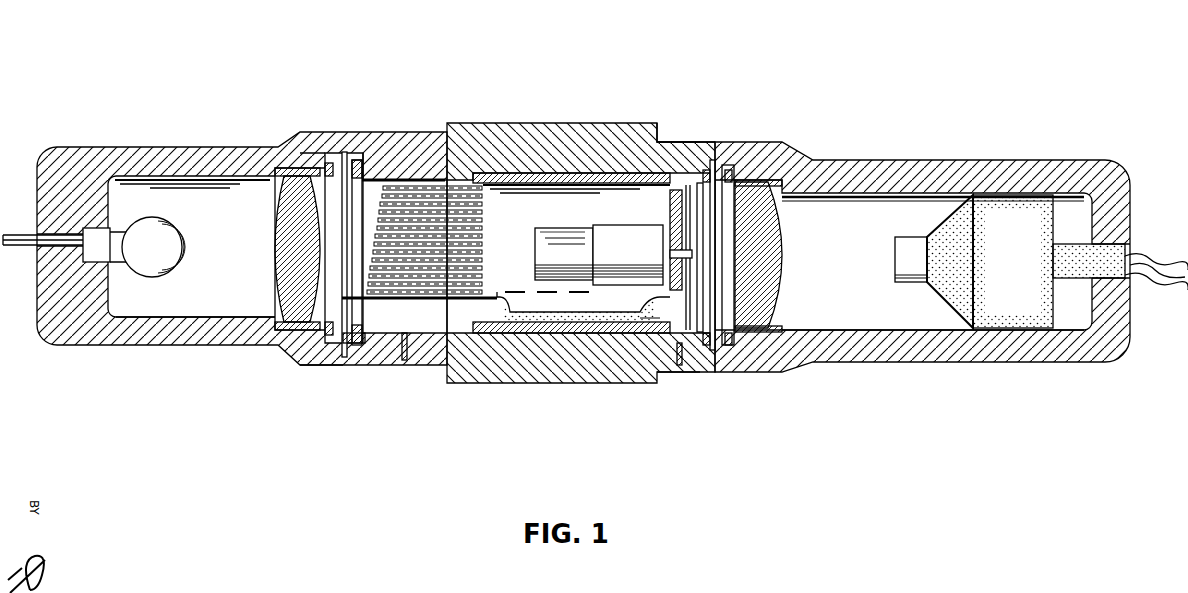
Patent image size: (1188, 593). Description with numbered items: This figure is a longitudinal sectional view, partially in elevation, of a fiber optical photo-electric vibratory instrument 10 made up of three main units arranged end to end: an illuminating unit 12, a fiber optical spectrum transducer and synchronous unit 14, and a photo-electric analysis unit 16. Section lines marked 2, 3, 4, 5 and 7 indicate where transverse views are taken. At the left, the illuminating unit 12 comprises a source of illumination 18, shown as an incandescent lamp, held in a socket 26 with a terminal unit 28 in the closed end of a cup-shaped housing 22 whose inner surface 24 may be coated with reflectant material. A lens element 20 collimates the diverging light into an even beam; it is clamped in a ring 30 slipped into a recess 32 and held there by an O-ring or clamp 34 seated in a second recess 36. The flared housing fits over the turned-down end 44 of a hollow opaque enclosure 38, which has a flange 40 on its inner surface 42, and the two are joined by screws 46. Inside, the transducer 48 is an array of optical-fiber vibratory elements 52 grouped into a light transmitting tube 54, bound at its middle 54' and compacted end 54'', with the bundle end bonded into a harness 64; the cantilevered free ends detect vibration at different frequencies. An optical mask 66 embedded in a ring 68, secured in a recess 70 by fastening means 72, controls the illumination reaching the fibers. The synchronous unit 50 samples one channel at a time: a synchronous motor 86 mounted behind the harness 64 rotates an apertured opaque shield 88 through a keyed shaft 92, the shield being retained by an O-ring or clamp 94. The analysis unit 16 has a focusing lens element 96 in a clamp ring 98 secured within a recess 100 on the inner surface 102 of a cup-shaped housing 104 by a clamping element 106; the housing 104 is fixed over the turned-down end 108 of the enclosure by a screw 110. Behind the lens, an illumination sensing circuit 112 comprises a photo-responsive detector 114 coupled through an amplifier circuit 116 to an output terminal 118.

The fiber optical photo-electric vibratory instrument 10 is at (551, 44).
The illuminating unit 12 is at (216, 261).
The fiber optical spectrum transducer and synchronous unit 14 is at (515, 258).
The photo-electric analysis unit 16 is at (845, 266).
The source of illumination 18 is at (190, 204).
The lens element 20 is at (273, 248).
The housing 22 is at (200, 147).
The inner surface 24 is at (195, 317).
The socket 26 is at (106, 252).
The terminal unit 28 is at (28, 235).
The ring 30 is at (270, 306).
The recess 32 is at (270, 190).
The O-ring or clamp 34 is at (312, 137).
The second recess 36 is at (318, 338).
The enclosure 38 is at (522, 124).
The flange 40 is at (437, 181).
The inner surface 42 is at (545, 183).
The end of the enclosure 44 is at (415, 148).
The screws or fastening elements 46 is at (405, 362).
The fiber optical spectrum transducer 48 is at (372, 212).
The synchronous or commutator unit 50 is at (572, 222).
The illumination conducting vibratory elements 52 is at (432, 302).
The light transmitting tube 54 is at (583, 307).
The middle of the fibers 54' is at (551, 298).
The compacted end 54'' is at (636, 304).
The harness 64 is at (672, 216).
The optical mask 66 is at (355, 304).
The ring 68 is at (360, 150).
The recess 70 is at (354, 346).
The fastening means 72 is at (328, 348).
The synchronous motor 86 is at (633, 261).
The rotatable opaque shield 88 is at (690, 208).
The keyed shaft 92 is at (675, 254).
The O-ring or clamp 94 is at (706, 165).
The focusing lens element 96 is at (780, 241).
The clamp ring 98 is at (786, 199).
The recess 100 is at (786, 310).
The inner surface 102 is at (876, 330).
The housing 104 is at (935, 158).
The O-ring or clamping element 106 is at (678, 135).
The turned down end 108 is at (655, 125).
The screw or fastening means 110 is at (672, 383).
The illumination sensing circuit 112 is at (935, 222).
The photo-responsive detector 114 is at (918, 266).
The amplifier circuit 116 is at (991, 266).
The output terminal 118 is at (1120, 267).
The section line 2- 2 is at (340, 297).
The section line 3- 3 is at (374, 73).
The section line 4- 4 is at (690, 93).
The section line 5- 5 is at (348, 27).
The section line 7- 7 is at (719, 425).